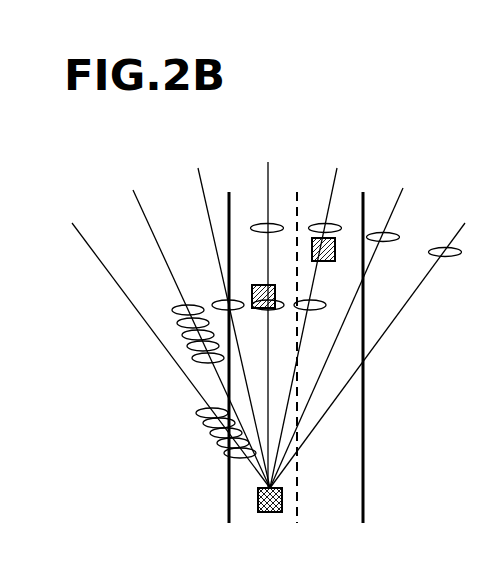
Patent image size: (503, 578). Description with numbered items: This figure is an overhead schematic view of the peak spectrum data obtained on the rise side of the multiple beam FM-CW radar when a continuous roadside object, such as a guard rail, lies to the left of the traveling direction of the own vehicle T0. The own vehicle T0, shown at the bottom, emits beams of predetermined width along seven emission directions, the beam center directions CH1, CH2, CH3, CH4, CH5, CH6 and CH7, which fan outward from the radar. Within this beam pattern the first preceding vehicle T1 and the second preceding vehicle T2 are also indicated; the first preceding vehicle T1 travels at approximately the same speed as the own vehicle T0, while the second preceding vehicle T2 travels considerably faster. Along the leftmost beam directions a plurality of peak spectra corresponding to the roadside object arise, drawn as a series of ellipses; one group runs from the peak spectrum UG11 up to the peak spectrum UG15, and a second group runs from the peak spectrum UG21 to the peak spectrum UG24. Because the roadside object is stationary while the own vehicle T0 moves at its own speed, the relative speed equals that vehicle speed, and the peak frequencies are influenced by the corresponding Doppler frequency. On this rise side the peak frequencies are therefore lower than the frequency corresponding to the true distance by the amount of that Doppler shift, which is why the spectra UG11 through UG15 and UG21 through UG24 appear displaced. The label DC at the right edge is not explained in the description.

The beam emission direction CH1 is at (156, 340).
The beam emission direction CH2 is at (187, 324).
The beam emission direction CH3 is at (220, 312).
The beam emission direction CH4 is at (268, 310).
The beam emission direction CH5 is at (317, 311).
The beam emission direction CH6 is at (354, 323).
The beam emission direction CH7 is at (378, 340).
The own vehicle T0 is at (270, 512).
The first preceding vehicle T1 is at (255, 285).
The second preceding vehicle T2 is at (335, 245).
The peak spectrum UG11 is at (227, 454).
The peak spectrum UG15 is at (200, 413).
The peak spectrum UG21 is at (190, 357).
The peak spectrum UG24 is at (178, 324).
The DC label DC is at (491, 304).